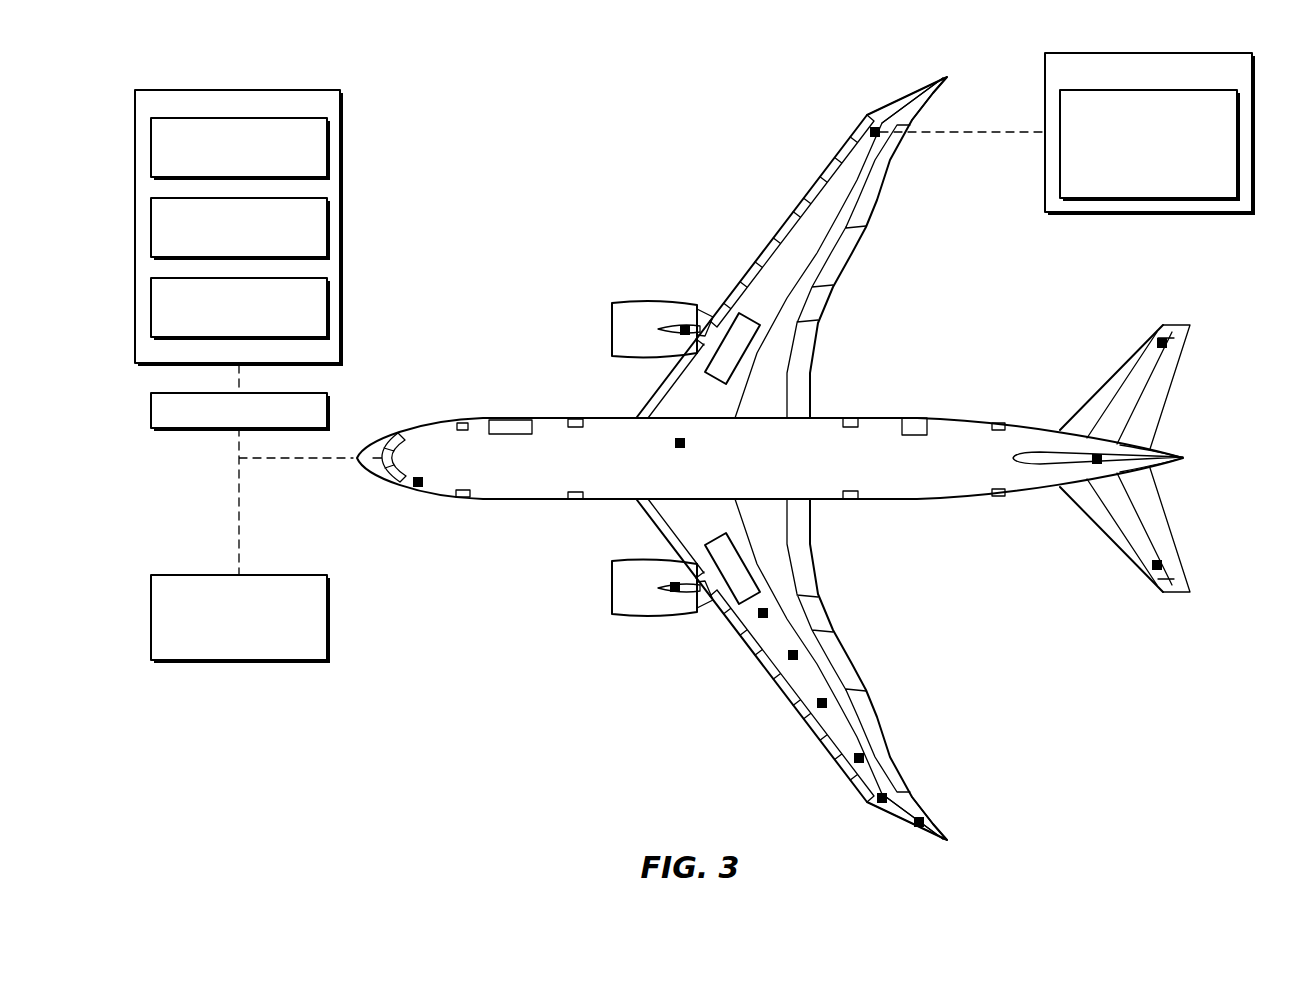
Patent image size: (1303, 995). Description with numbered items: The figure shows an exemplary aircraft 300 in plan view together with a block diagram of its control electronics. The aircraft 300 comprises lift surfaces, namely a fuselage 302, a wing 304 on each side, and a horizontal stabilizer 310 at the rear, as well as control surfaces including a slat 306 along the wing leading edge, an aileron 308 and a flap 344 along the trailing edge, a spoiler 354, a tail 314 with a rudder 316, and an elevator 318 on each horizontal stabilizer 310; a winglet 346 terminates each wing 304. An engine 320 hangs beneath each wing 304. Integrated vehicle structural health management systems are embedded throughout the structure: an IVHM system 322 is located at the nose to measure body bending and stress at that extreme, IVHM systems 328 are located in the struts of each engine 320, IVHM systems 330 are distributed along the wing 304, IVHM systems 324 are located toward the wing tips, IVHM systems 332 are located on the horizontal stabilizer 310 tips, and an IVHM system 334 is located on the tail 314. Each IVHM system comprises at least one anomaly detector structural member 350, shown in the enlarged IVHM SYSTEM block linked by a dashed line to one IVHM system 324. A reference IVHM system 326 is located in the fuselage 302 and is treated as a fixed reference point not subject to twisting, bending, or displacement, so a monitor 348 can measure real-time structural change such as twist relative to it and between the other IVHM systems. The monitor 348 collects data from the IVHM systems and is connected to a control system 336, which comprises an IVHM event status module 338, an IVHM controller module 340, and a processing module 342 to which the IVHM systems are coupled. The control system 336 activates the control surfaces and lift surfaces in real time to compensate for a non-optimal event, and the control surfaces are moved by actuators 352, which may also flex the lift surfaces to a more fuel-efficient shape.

The aircraft 300 is at (602, 156).
The fuselage 302 is at (542, 463).
The wing 304 is at (800, 238).
The slat 306 is at (825, 170).
The aileron 308 is at (883, 168).
The horizontal stabilizer 310 is at (1113, 372).
The tail 314 is at (1038, 462).
The rudder 316 is at (1157, 455).
The elevator 318 is at (1150, 407).
The engine 320 is at (623, 312).
The IVHM system 322 is at (418, 490).
The IVHM system 324 is at (870, 130).
The reference IVHM system 326 is at (679, 438).
The IVHM system 328 is at (682, 327).
The IVHM system 330 is at (760, 617).
The IVHM system 332 is at (1157, 340).
The IVHM system 334 is at (1098, 455).
The control system 336 is at (308, 90).
The IVHM event status module 338 is at (330, 135).
The IVHM controller module 340 is at (330, 215).
The processing module 342 is at (330, 295).
The flap 344 is at (838, 253).
The winglet 346 is at (948, 78).
The monitor 348 is at (330, 410).
The anomaly detector structural member 350 is at (1212, 203).
The actuators 352 is at (330, 635).
The spoiler 354 is at (737, 300).